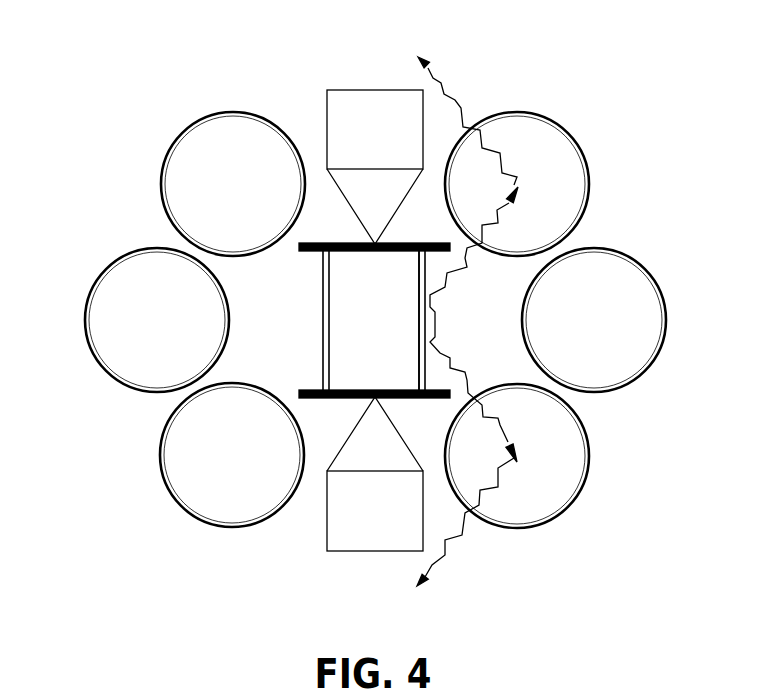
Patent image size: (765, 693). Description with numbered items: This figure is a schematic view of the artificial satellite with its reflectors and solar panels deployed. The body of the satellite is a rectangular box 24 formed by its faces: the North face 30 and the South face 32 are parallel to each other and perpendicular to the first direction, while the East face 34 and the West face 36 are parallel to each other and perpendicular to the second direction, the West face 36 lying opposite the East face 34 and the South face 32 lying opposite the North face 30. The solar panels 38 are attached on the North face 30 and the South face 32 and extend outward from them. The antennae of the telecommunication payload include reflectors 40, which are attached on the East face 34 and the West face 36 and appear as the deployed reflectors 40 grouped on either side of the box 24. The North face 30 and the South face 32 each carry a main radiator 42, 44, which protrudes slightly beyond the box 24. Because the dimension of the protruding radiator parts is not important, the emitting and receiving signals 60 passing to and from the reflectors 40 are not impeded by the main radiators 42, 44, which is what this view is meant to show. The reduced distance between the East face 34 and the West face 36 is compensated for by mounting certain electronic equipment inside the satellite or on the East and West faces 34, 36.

The rectangular box 24 is at (331, 320).
The North face 30 is at (335, 243).
The South face 32 is at (335, 398).
The East face 34 is at (425, 363).
The West face 36 is at (323, 310).
The solar panels 38 is at (362, 108).
The reflectors 40 is at (212, 155).
The main radiator 42 is at (349, 157).
The main radiator 44 is at (349, 485).
The emitting and receiving signals 60 is at (460, 102).